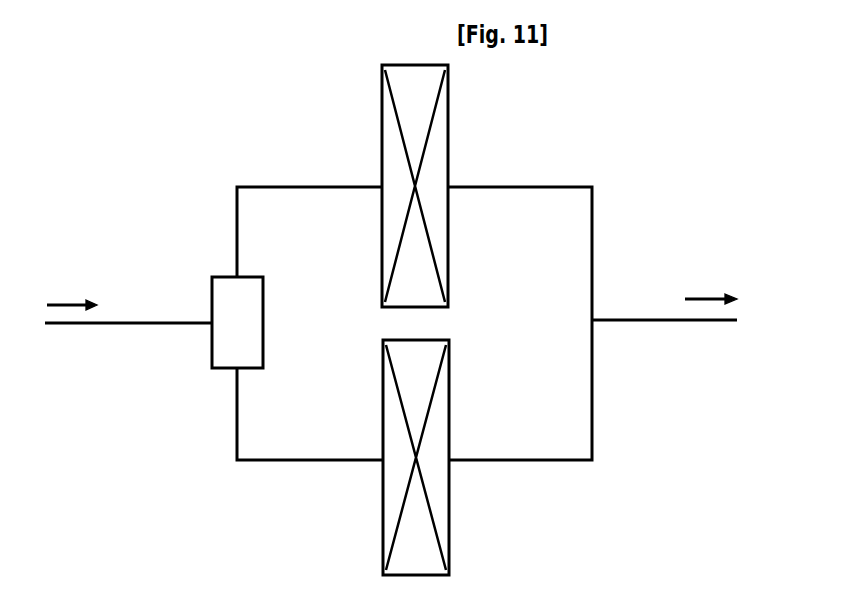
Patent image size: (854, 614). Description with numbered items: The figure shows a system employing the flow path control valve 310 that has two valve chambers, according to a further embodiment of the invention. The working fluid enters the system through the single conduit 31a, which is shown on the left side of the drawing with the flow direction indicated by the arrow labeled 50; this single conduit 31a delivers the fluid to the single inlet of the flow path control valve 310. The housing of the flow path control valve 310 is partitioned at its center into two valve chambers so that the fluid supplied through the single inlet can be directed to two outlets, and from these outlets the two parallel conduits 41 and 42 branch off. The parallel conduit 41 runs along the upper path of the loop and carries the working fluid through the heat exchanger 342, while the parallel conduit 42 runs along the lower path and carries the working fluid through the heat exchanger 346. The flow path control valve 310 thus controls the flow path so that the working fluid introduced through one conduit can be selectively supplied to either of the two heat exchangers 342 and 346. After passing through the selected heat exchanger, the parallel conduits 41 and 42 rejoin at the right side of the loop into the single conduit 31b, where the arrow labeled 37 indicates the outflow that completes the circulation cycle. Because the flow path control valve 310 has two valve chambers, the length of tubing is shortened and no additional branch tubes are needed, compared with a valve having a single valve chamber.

The parallel conduit 41 is at (292, 187).
The parallel conduit 42 is at (300, 460).
The single conduit 31a is at (150, 323).
The single conduit 31b is at (640, 320).
The input signal 50 is at (72, 288).
The output signal 37 is at (711, 282).
The flow path control valve 310 is at (212, 293).
The heat exchanger 342 is at (448, 113).
The heat exchanger 346 is at (449, 510).